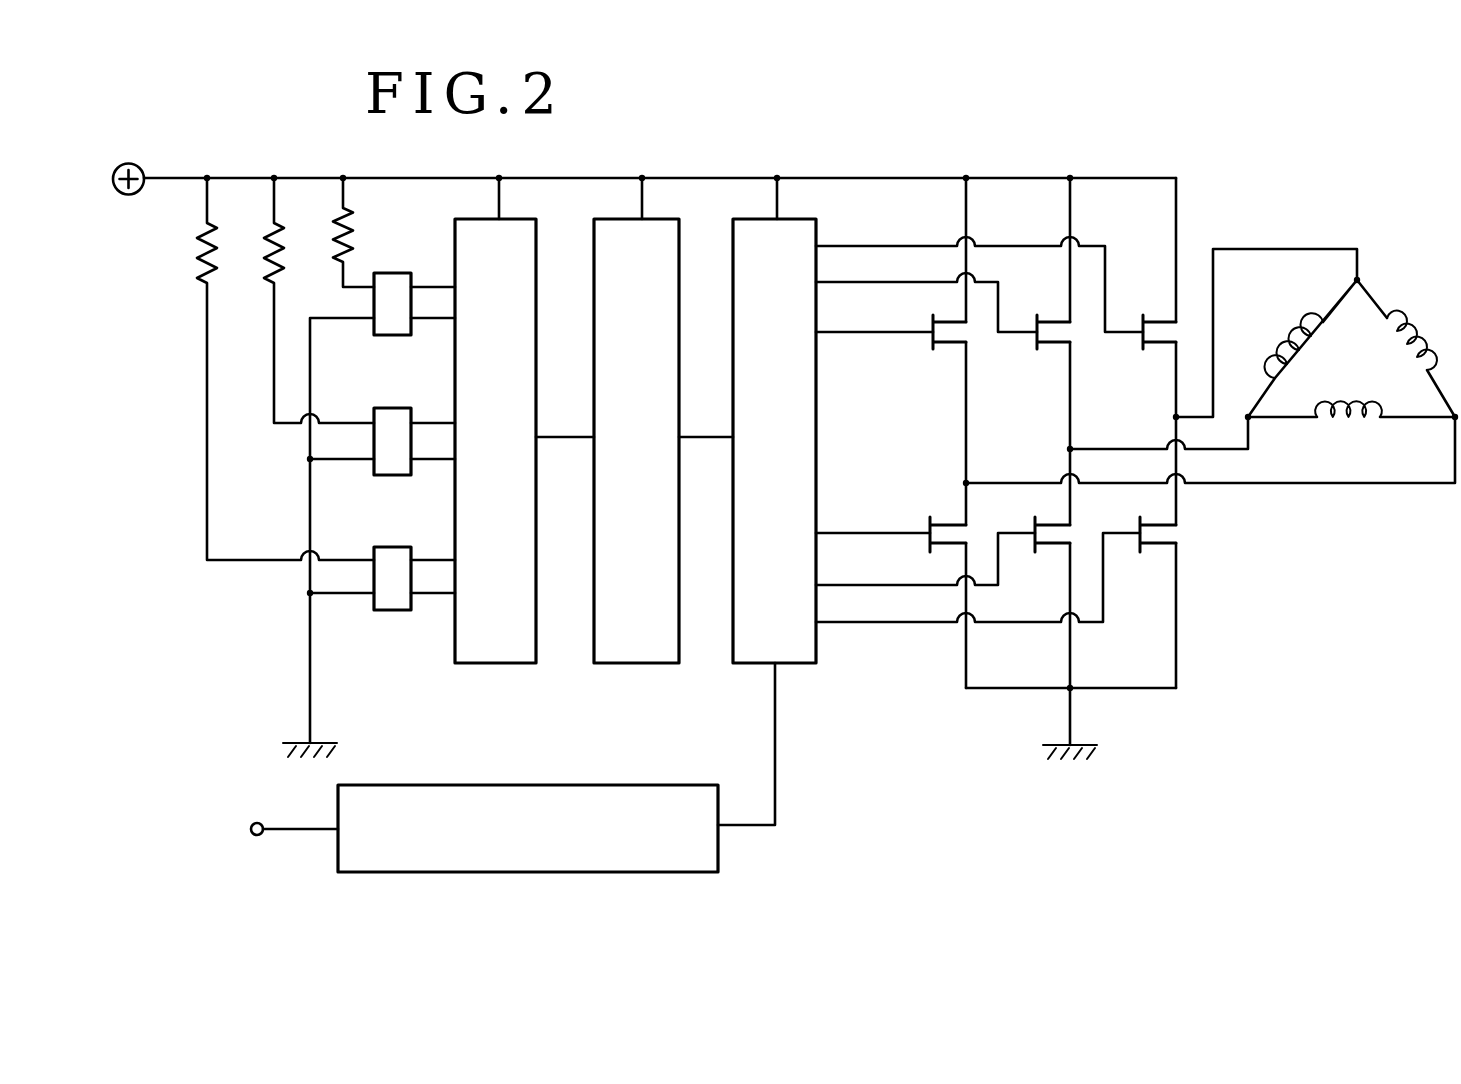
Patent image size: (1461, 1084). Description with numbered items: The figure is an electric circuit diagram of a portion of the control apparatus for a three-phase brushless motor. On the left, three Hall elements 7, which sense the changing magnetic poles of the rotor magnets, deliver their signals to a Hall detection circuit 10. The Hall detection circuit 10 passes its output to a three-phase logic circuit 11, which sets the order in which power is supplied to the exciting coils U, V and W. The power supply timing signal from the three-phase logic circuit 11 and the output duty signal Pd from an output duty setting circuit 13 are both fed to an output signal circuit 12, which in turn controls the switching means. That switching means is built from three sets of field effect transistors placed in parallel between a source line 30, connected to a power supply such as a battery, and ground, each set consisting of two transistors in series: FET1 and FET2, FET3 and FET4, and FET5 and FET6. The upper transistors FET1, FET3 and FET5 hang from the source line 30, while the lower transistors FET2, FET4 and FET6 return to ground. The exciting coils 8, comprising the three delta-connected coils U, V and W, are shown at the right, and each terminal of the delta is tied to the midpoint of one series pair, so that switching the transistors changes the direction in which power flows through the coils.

The Hall elements 7 is at (395, 273).
The exciting coils 8 is at (1418, 310).
The Hall detection circuit 10 is at (505, 663).
The three-phase logic circuit 11 is at (625, 663).
The output signal circuit 12 is at (795, 663).
The output duty setting circuit 13 is at (675, 785).
The source line 30 is at (715, 178).
The field effect transistor FET1 is at (1153, 313).
The field effect transistor FET2 is at (1152, 548).
The field effect transistor FET3 is at (1050, 313).
The field effect transistor FET4 is at (1057, 547).
The field effect transistor FET5 is at (947, 313).
The field effect transistor FET6 is at (950, 548).